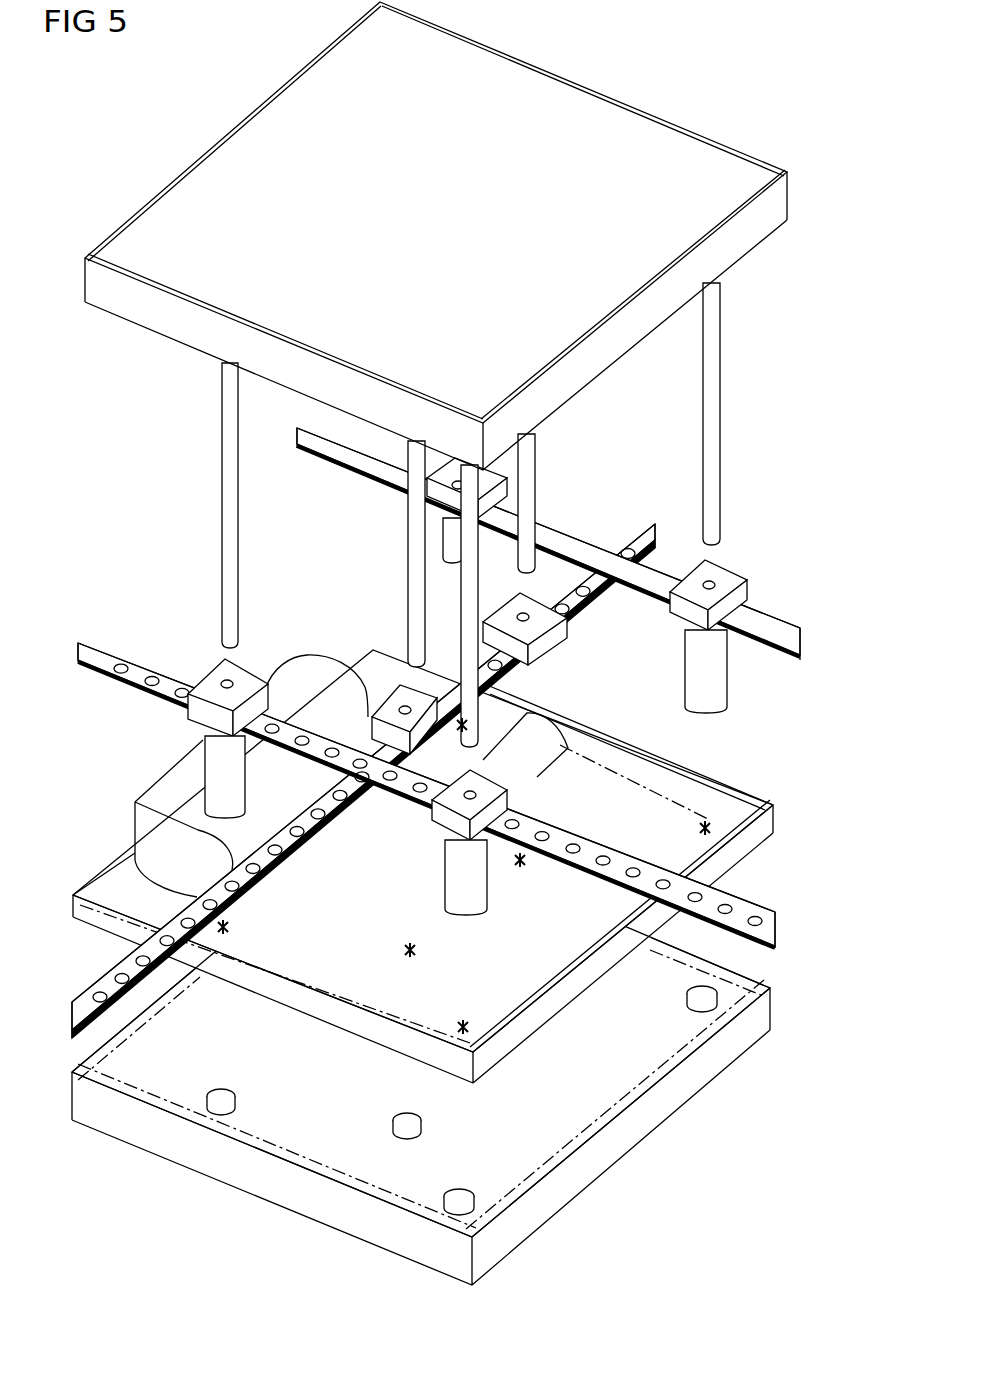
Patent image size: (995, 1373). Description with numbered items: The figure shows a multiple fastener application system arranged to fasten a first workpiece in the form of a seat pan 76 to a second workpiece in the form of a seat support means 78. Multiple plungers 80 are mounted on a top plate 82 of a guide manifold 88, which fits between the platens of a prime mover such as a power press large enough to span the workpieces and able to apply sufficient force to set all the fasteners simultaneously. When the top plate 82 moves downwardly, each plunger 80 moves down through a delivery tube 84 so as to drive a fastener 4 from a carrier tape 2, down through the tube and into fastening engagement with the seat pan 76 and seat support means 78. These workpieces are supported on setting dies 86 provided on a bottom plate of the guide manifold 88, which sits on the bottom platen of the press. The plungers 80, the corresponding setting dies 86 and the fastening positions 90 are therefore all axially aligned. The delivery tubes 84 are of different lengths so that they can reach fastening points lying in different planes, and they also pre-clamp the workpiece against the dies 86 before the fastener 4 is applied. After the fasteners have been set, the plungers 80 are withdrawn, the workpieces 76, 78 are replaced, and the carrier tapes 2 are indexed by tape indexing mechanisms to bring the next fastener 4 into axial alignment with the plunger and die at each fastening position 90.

The carrier tape 2 is at (772, 625).
The fastener 4 is at (552, 528).
The seat pan 76 is at (172, 790).
The seat support means 78 is at (122, 883).
The plunger 80 is at (720, 390).
The top plate 82 is at (595, 125).
The delivery tube 84 is at (447, 545).
The setting die 86 is at (220, 1098).
The guide manifold 88 is at (600, 1095).
The fastening position 90 is at (232, 927).